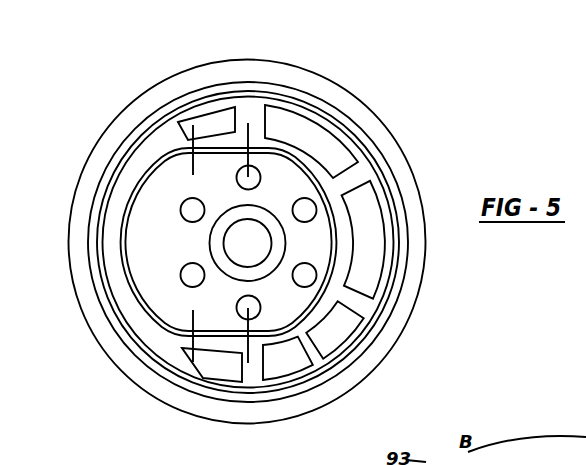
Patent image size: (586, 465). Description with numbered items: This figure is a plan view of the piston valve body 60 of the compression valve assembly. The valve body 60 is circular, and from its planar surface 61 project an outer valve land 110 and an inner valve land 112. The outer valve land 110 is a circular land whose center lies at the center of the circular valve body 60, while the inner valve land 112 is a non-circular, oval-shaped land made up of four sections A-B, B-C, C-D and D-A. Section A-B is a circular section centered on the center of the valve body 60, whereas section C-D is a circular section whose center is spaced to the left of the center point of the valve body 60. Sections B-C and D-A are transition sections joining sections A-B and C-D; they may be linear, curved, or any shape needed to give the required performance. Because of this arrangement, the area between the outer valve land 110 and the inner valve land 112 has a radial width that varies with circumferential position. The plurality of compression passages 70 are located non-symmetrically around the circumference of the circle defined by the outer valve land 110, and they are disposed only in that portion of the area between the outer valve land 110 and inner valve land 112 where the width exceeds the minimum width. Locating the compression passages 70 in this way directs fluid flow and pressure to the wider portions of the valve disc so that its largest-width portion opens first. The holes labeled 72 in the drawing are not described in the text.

The valve body 60 is at (352, 102).
The outer valve land 110 is at (358, 147).
The inner valve land 112 is at (150, 352).
The planar surface 61 is at (136, 321).
The mounting holes 72 is at (190, 275).
The compression passages 70 is at (373, 248).
The section point A is at (250, 151).
The section point B is at (247, 336).
The section point C is at (192, 335).
The section point D is at (192, 152).